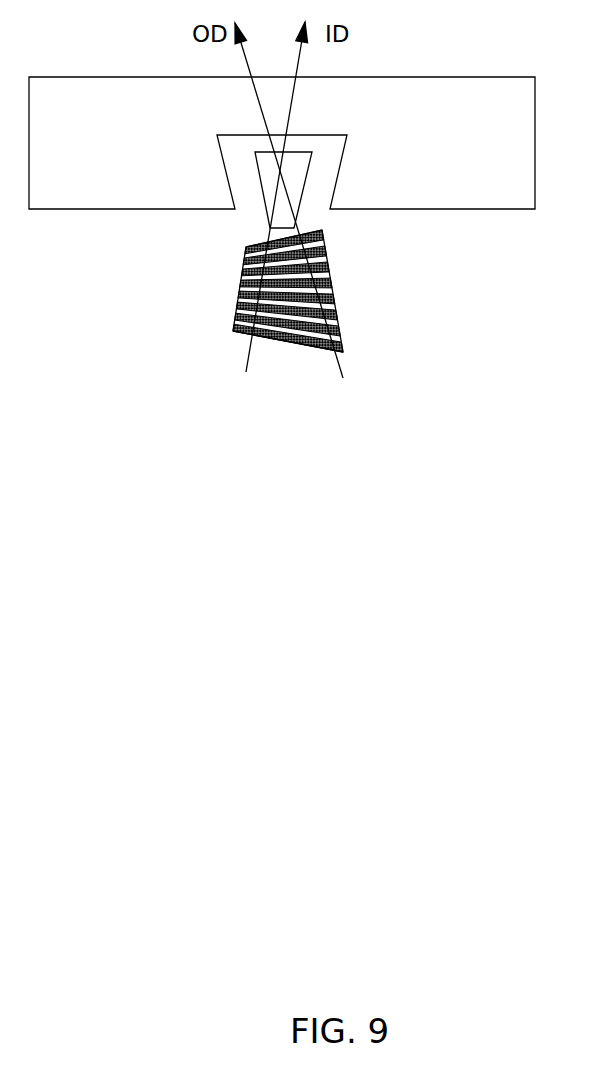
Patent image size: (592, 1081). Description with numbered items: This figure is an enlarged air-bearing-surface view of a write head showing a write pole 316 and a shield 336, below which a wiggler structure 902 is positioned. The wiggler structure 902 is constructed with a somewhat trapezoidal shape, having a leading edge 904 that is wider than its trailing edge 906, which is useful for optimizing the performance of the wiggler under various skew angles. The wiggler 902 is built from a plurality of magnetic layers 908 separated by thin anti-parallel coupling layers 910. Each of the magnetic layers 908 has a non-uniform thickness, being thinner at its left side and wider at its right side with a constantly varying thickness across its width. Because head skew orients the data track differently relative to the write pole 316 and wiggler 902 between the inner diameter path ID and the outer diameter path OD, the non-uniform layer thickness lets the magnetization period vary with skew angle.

The shield 336 is at (463, 125).
The write pole 316 is at (299, 168).
The trailing edge 906 is at (270, 241).
The magnetic layers 908 is at (323, 235).
The anti-parallel coupling layers 910 is at (245, 256).
The leading edge 904 is at (313, 354).
The wiggler structure 902 is at (324, 366).